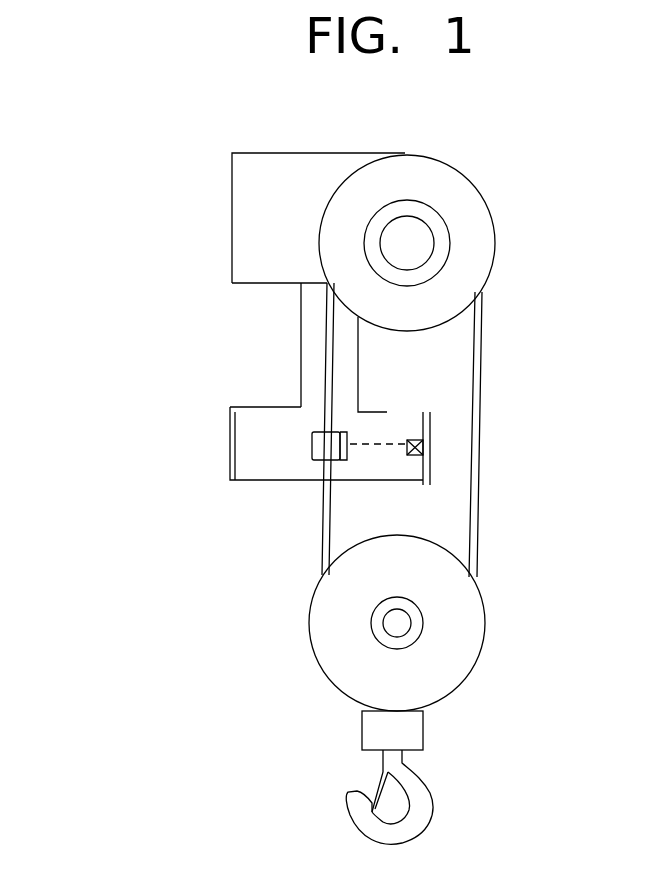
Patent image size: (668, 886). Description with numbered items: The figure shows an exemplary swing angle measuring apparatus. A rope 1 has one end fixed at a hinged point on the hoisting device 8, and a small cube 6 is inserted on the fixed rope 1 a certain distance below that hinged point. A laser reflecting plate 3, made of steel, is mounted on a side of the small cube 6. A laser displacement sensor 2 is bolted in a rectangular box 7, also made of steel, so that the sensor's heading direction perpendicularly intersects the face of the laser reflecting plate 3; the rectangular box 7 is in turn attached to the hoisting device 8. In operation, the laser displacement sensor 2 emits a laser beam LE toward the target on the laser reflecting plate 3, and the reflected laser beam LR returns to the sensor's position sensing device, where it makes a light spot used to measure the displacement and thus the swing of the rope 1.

The rope 1 is at (322, 517).
The laser displacement sensor 2 is at (430, 455).
The laser reflecting plate 3 is at (350, 440).
The small cube 6 is at (312, 438).
The rectangular box 7 is at (228, 437).
The hoisting device 8 is at (478, 240).
The emitted laser beam LE is at (390, 443).
The reflected laser beam LR is at (403, 452).